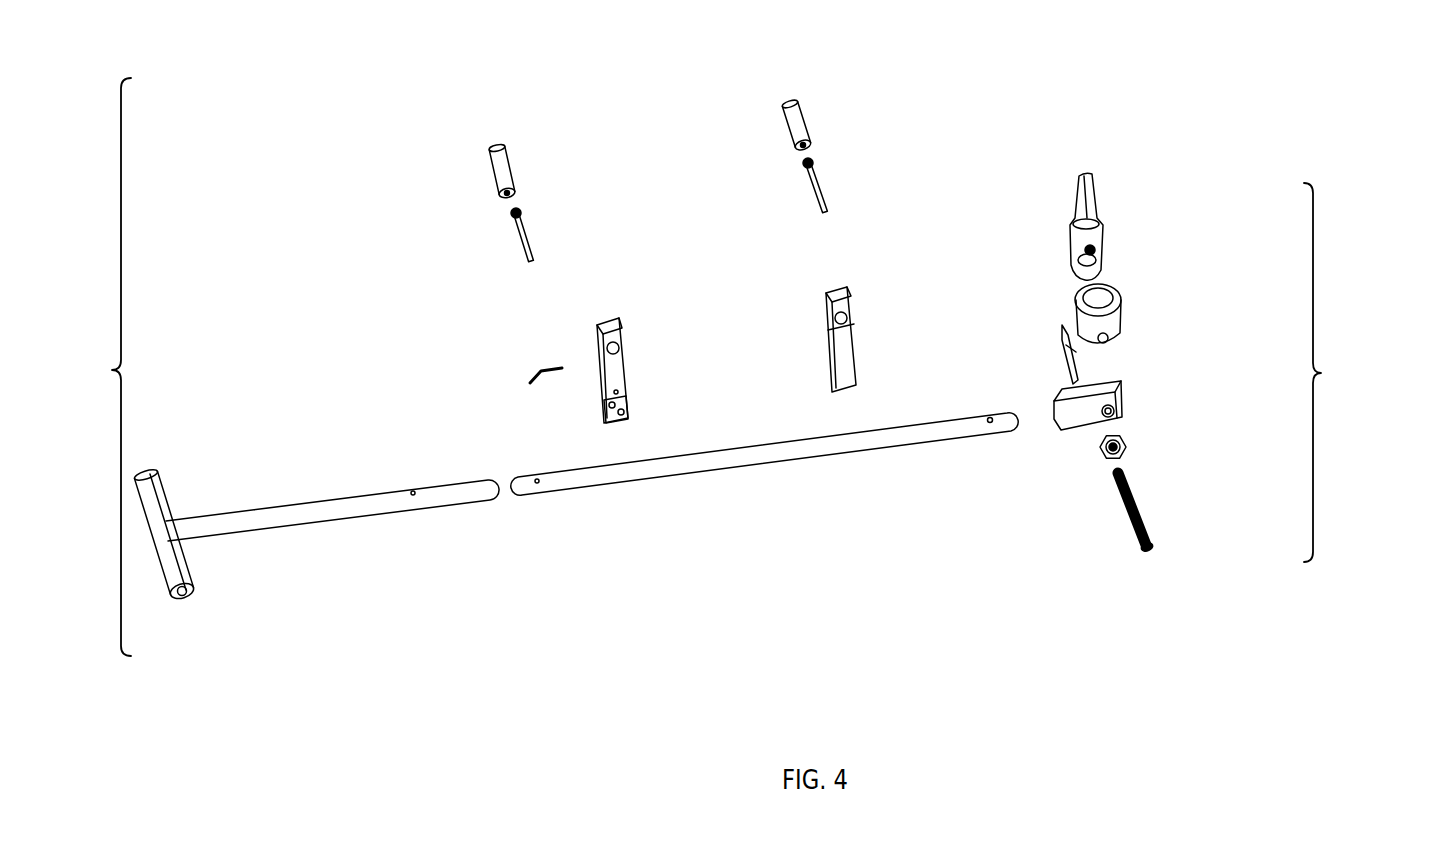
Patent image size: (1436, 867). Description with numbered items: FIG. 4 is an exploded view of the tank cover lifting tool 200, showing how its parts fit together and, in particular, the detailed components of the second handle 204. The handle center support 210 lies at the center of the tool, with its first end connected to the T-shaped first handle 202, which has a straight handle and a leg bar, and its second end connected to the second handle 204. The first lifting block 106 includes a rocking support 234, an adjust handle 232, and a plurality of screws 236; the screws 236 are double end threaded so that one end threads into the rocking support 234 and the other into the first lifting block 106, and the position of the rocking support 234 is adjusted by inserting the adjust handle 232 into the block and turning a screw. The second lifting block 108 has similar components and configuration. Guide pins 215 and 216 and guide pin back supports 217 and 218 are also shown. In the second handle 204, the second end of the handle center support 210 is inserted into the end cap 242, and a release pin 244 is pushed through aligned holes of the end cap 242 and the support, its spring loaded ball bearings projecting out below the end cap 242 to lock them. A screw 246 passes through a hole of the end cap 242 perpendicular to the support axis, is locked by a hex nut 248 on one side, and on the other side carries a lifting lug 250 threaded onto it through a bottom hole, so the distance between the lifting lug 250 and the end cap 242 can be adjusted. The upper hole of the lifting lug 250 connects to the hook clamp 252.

The tank cover lifting tool 200 is at (100, 367).
The first handle 202 is at (190, 535).
The second handle 204 is at (1368, 372).
The first lifting block 106 is at (611, 316).
The second lifting block 108 is at (836, 286).
The handle center support 210 is at (676, 466).
The guide pin 215 is at (509, 218).
The guide pin 216 is at (816, 169).
The guide pin back support 217 is at (494, 150).
The guide pin back support 218 is at (795, 99).
The adjust handle 232 is at (530, 361).
The rocking support 234 is at (605, 409).
The screws 236 is at (627, 420).
The end cap 242 is at (1123, 400).
The release pin 244 is at (1058, 361).
The screw 246 is at (1140, 503).
The hex nut 248 is at (1125, 451).
The lifting lug 250 is at (1110, 330).
The hook clamp 252 is at (1106, 237).